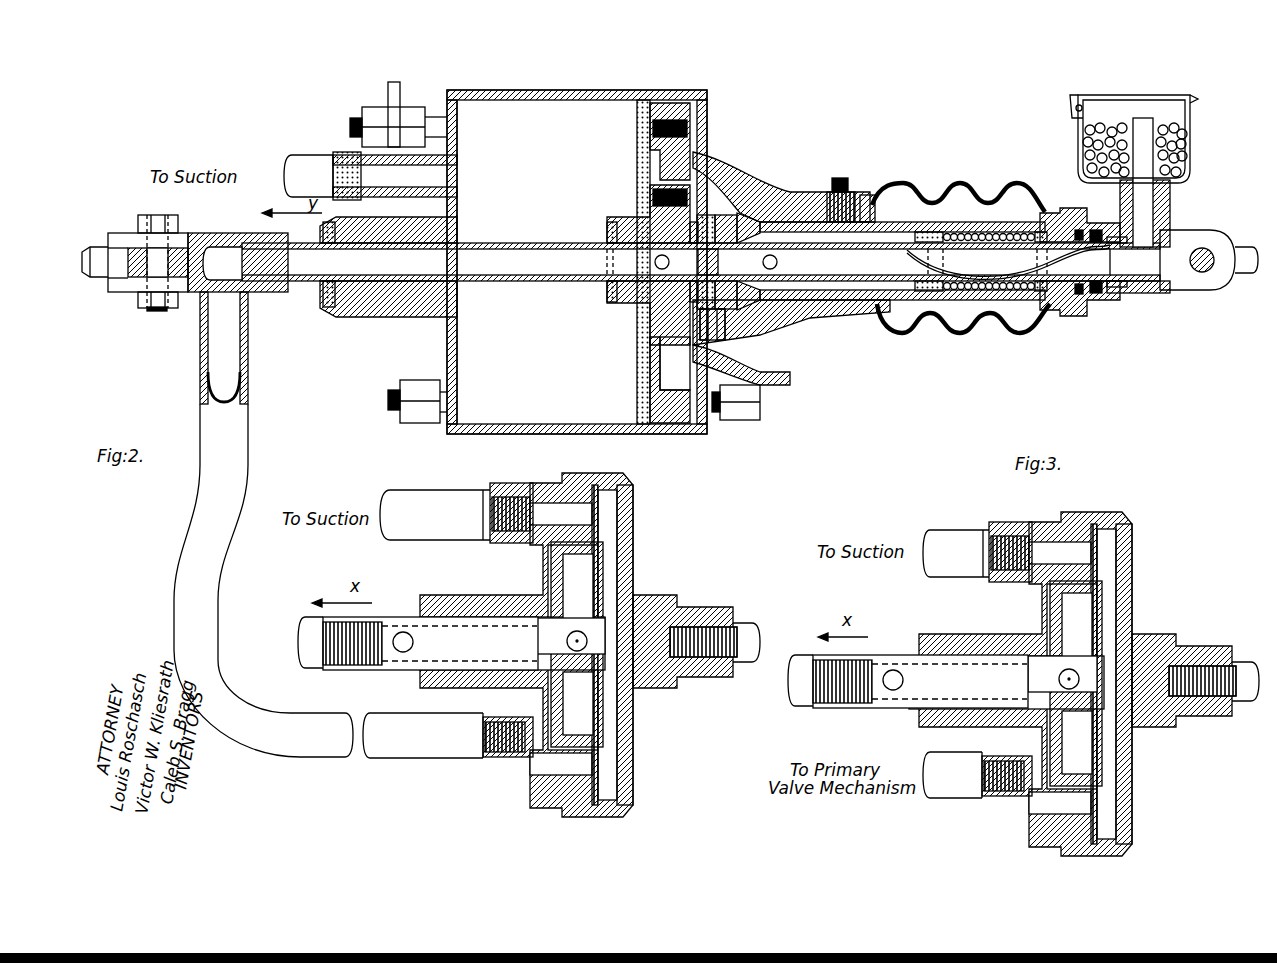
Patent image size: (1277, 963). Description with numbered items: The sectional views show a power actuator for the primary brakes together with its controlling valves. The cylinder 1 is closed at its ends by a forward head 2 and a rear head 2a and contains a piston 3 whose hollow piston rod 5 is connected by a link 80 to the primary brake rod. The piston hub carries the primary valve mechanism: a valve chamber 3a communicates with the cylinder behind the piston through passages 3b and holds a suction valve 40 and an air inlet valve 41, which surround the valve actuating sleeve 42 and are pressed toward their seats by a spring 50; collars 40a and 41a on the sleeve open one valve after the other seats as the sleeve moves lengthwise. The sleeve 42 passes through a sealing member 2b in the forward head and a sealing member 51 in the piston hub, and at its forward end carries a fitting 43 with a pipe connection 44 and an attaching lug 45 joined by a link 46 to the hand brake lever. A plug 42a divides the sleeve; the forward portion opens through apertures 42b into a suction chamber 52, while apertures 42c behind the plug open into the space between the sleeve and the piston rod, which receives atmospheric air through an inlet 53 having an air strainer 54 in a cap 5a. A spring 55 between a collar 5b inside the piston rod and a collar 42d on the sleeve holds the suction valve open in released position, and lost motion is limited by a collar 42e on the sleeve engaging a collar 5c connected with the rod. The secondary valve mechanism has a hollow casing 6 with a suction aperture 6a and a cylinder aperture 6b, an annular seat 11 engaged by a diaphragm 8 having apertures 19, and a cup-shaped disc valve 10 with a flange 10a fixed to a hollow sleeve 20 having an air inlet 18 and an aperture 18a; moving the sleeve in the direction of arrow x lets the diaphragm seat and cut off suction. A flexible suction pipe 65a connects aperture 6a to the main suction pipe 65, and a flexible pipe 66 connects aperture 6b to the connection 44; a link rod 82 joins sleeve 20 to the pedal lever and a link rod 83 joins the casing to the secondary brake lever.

In FIG. 2, the cylinder 1 is at (505, 434).
In FIG. 2, the forward head 2 is at (457, 355).
In FIG. 2, the rear head 2a is at (742, 421).
In FIG. 2, the sealing member 2b is at (398, 294).
In FIG. 2, the piston 3 is at (660, 422).
In FIG. 2, the valve chamber 3a is at (748, 210).
In FIG. 2, the passage 3b is at (735, 355).
In FIG. 2, the hollow piston rod 5 is at (883, 302).
In FIG. 2, the cap 5a is at (1095, 302).
In FIG. 2, the collar 5b is at (940, 230).
In FIG. 2, the collar 5c is at (1075, 302).
In FIG. 2, the valve casing 6 is at (596, 484).
In FIG. 3, the valve casing 6 is at (1100, 520).
In FIG. 2, the suction aperture 6a is at (510, 492).
In FIG. 3, the suction aperture 6a is at (1010, 532).
In FIG. 2, the cylinder aperture 6b is at (505, 765).
In FIG. 3, the cylinder aperture 6b is at (1000, 800).
In FIG. 2, the diaphragm 8 is at (606, 567).
In FIG. 3, the diaphragm 8 is at (1098, 615).
In FIG. 2, the disc valve 10 is at (565, 696).
In FIG. 3, the disc valve 10 is at (1050, 736).
In FIG. 2, the annular flange 10a is at (581, 588).
In FIG. 3, the annular flange 10a is at (1074, 627).
In FIG. 2, the annular seat 11 is at (561, 638).
In FIG. 3, the annular seat 11 is at (1060, 681).
In FIG. 2, the inlet aperture 18 is at (403, 631).
In FIG. 3, the inlet aperture 18 is at (890, 690).
In FIG. 2, the communicating aperture 18a is at (570, 636).
In FIG. 3, the communicating aperture 18a is at (1062, 674).
In FIG. 2, the diaphragm aperture 19 is at (600, 512).
In FIG. 3, the diaphragm aperture 19 is at (1098, 556).
In FIG. 2, the hollow sleeve 20 is at (391, 668).
In FIG. 3, the hollow sleeve 20 is at (895, 658).
In FIG. 2, the suction valve 40 is at (668, 300).
In FIG. 2, the collar 40a is at (675, 288).
In FIG. 2, the air inlet valve 41 is at (772, 224).
In FIG. 2, the collar 41a is at (805, 312).
In FIG. 2, the valve actuating sleeve 42 is at (527, 243).
In FIG. 2, the plug 42a is at (718, 262).
In FIG. 2, the aperture 42b is at (657, 264).
In FIG. 2, the aperture 42c is at (778, 262).
In FIG. 2, the collar 42d is at (1040, 292).
In FIG. 2, the rod shoulder 42e is at (1128, 292).
In FIG. 2, the fitting 43 is at (208, 246).
In FIG. 2, the pipe connection 44 is at (220, 348).
In FIG. 2, the attaching lug 45 is at (135, 282).
In FIG. 2, the link 46 is at (93, 246).
In FIG. 2, the spring 50 is at (737, 300).
In FIG. 2, the sealing member 51 is at (612, 290).
In FIG. 2, the suction chamber 52 is at (656, 233).
In FIG. 2, the air inlet 53 is at (1150, 235).
In FIG. 2, the air strainer 54 is at (1170, 152).
In FIG. 2, the spring 55 is at (992, 233).
In FIG. 2, the main suction pipe 65 is at (297, 158).
In FIG. 2, the suction pipe 65a is at (422, 496).
In FIG. 3, the suction pipe 65a is at (947, 528).
In FIG. 2, the pipe 66 is at (232, 505).
In FIG. 3, the pipe 66 is at (935, 780).
In FIG. 2, the link 80 is at (1245, 275).
In FIG. 2, the link rod 82 is at (305, 633).
In FIG. 3, the link rod 82 is at (800, 692).
In FIG. 2, the link rod 83 is at (750, 628).
In FIG. 3, the link rod 83 is at (1243, 702).